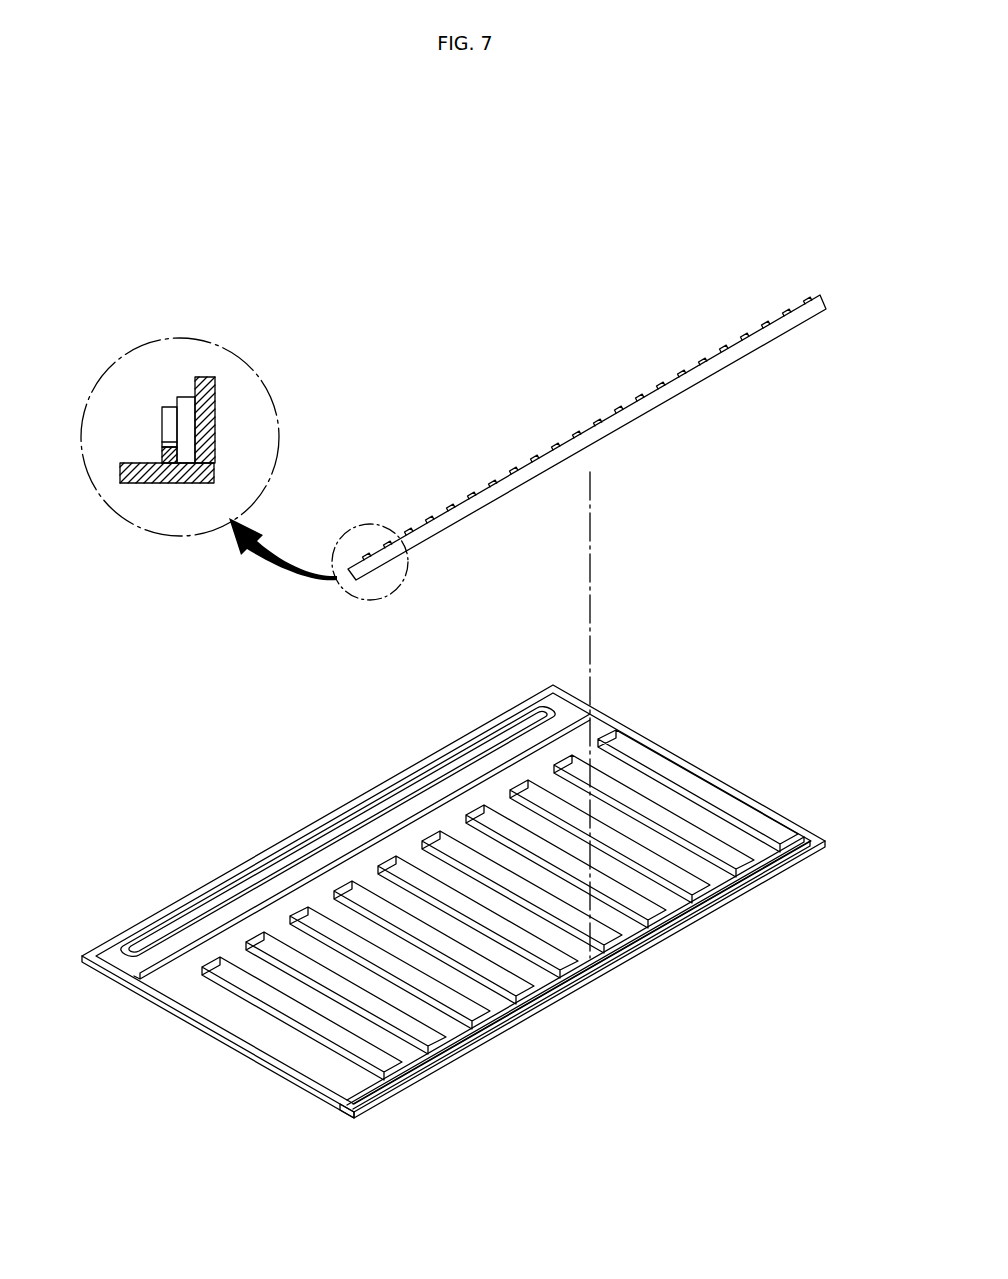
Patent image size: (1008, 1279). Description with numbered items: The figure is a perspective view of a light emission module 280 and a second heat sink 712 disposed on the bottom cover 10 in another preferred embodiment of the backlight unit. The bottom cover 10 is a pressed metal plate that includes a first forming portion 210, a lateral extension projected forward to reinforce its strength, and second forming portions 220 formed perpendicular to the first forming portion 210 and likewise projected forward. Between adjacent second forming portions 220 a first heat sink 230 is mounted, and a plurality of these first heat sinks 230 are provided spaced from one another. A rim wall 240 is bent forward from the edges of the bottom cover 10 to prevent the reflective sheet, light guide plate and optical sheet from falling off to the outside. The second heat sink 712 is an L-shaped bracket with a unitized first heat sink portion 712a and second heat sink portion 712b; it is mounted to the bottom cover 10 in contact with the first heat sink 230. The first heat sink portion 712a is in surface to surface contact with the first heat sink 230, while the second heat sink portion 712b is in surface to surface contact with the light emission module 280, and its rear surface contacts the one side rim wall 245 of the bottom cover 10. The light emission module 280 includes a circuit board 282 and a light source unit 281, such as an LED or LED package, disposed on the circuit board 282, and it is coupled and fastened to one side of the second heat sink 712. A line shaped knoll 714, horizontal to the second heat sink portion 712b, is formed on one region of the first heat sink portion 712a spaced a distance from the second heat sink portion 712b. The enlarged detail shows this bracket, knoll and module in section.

The bottom cover 10 is at (450, 888).
The first forming portion 210 is at (187, 918).
The second forming portions 220 is at (670, 817).
The first heat sink 230 is at (713, 872).
The rim wall 240 is at (152, 995).
The one side rim wall 245 is at (350, 1106).
The light emission module 280 is at (481, 404).
The light source unit 281 is at (168, 413).
The circuit board 282 is at (186, 405).
The second heat sink 712 is at (267, 532).
The first heat sink portion 712a is at (145, 476).
The second heat sink portion 712b is at (207, 430).
The line shaped knoll 714 is at (161, 449).